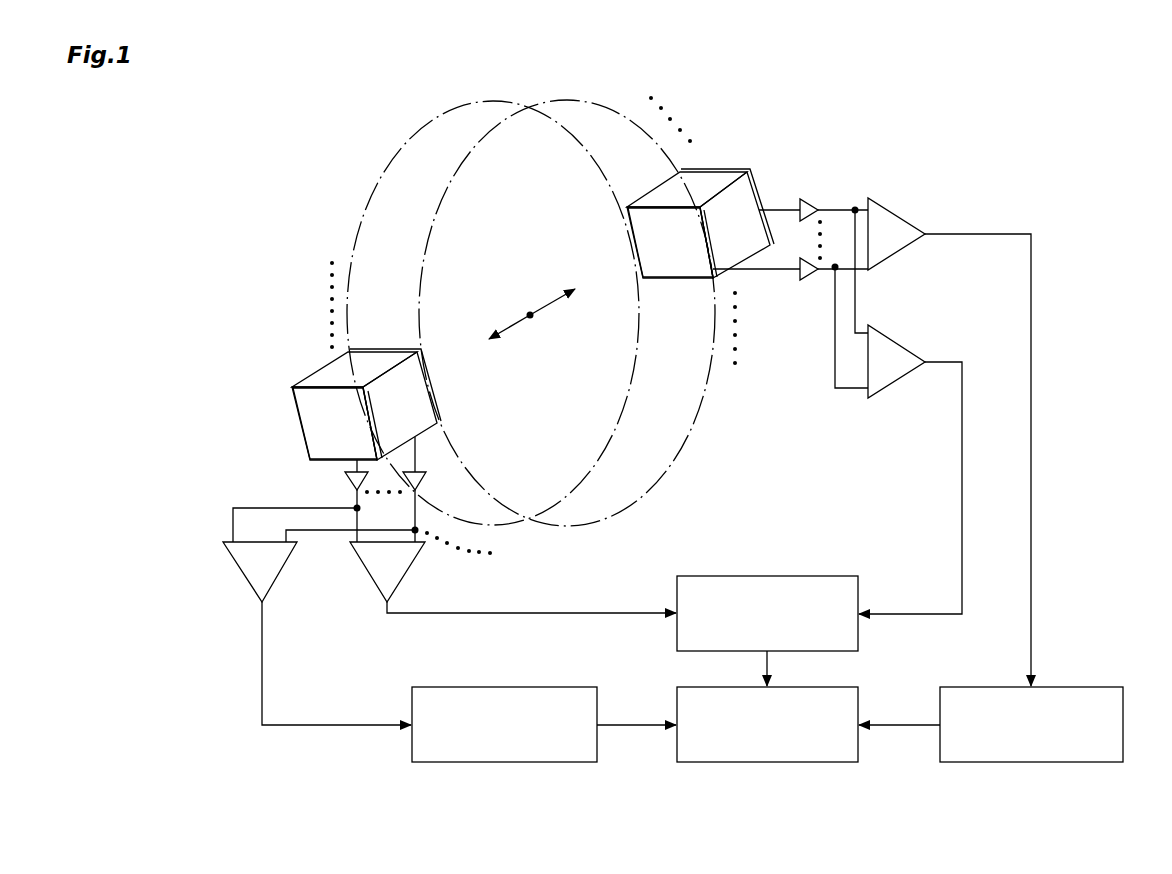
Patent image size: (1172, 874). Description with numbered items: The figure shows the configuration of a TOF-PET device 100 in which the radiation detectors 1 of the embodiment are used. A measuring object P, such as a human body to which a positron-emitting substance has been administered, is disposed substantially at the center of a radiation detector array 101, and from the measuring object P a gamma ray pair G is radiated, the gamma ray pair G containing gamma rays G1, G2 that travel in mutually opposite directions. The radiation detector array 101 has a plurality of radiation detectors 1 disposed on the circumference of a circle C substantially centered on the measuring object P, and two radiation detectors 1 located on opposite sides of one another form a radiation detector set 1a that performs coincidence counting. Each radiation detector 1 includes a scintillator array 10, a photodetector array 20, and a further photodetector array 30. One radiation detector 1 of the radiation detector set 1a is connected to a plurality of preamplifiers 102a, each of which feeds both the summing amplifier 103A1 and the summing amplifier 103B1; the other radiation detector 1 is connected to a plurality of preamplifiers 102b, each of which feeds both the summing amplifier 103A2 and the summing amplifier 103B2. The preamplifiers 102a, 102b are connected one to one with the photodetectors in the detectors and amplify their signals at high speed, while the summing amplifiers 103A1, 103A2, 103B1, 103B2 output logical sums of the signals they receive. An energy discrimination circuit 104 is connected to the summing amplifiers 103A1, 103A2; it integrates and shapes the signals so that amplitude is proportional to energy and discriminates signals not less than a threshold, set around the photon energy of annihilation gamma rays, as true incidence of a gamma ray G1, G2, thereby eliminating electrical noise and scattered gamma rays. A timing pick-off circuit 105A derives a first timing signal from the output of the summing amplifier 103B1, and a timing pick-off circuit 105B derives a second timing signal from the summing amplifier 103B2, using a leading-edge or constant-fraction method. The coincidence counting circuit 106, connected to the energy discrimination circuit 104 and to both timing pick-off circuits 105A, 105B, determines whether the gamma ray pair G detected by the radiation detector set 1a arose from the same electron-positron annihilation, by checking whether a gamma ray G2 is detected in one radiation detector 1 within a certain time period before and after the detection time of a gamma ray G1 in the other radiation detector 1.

The TOF-PET device 100 is at (964, 132).
The radiation detector array 101 is at (534, 96).
The circle C is at (372, 190).
The radiation detector 1 is at (396, 339).
The radiation detector set 1a is at (465, 199).
The scintillator array 10 is at (323, 373).
The photodetector array 20 is at (428, 372).
The photodetector array 30 is at (308, 430).
The measuring object P is at (529, 313).
The gamma ray pair G is at (510, 389).
The gamma ray G1 is at (551, 305).
The gamma ray G2 is at (509, 333).
The preamplifier 102a is at (811, 200).
The preamplifier 102b is at (345, 480).
The summing amplifier 103B1 is at (905, 218).
The summing amplifier 103A1 is at (900, 380).
The summing amplifier 103B2 is at (237, 567).
The summing amplifier 103A2 is at (367, 575).
The energy discrimination circuit 104 is at (786, 575).
The timing pick-off circuit 105A is at (1046, 763).
The timing pick-off circuit 105B is at (497, 763).
The coincidence counting circuit 106 is at (795, 763).